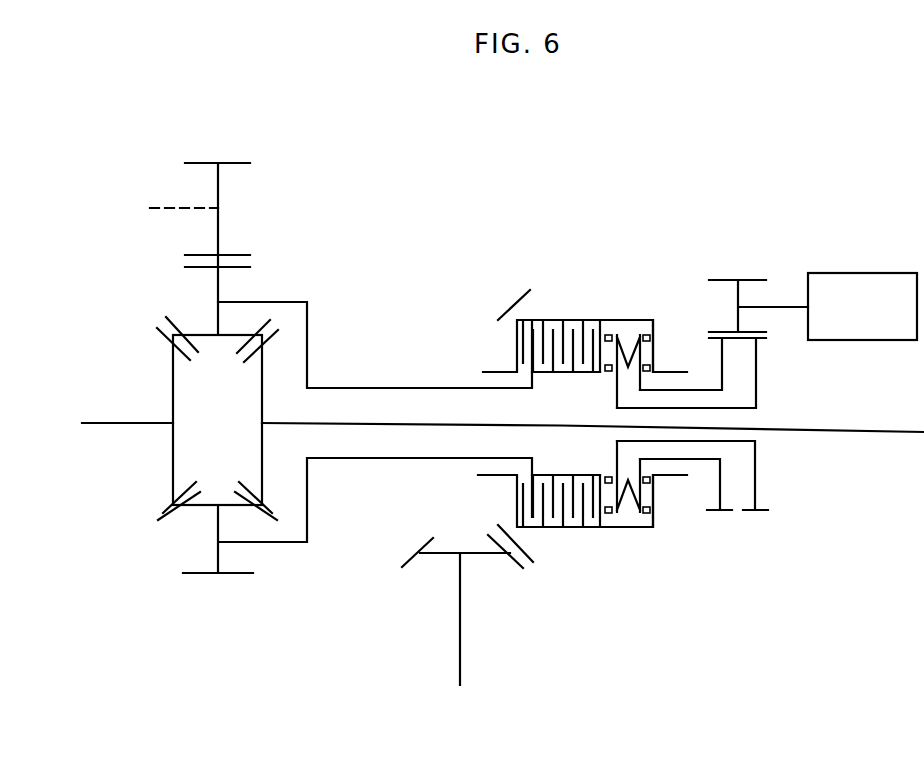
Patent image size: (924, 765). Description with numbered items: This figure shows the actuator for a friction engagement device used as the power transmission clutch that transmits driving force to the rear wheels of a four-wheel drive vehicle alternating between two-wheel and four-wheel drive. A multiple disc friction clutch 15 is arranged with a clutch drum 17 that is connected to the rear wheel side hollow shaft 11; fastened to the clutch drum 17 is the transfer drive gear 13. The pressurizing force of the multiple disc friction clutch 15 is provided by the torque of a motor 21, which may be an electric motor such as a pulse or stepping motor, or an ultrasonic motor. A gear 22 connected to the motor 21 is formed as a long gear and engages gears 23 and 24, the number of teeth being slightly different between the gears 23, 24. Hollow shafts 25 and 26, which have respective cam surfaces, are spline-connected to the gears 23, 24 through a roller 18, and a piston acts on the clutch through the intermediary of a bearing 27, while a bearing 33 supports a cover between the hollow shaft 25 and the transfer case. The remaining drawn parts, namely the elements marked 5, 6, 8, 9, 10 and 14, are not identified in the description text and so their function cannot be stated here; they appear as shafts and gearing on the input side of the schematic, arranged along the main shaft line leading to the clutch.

The gear 5 is at (220, 228).
The clutch plates 6 is at (234, 268).
The differential gear 8 is at (210, 370).
The axle shaft 9 is at (130, 422).
The main shaft 10 is at (846, 432).
The rear wheel side hollow shaft 11 is at (394, 388).
The transfer drive gear 13 is at (503, 312).
The support bracket 14 is at (428, 555).
The multiple disc friction clutch 15 is at (578, 332).
The clutch drum 17 is at (546, 318).
The roller 18 is at (629, 345).
The motor 21 is at (848, 290).
The gear 22 is at (733, 280).
The gear 23 is at (726, 342).
The gear 24 is at (763, 343).
The hollow shaft 25 is at (708, 388).
The hollow shaft 26 is at (733, 410).
The bearing 27 is at (606, 374).
The bearing 33 is at (652, 350).